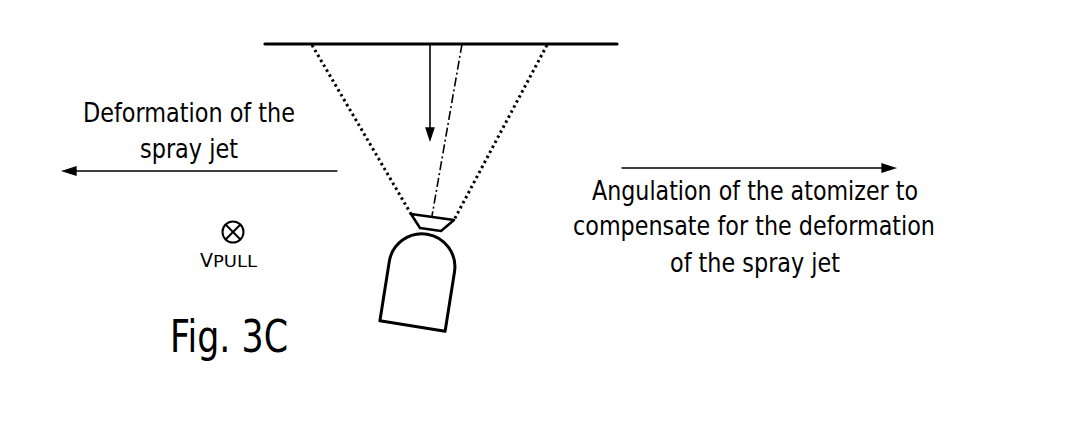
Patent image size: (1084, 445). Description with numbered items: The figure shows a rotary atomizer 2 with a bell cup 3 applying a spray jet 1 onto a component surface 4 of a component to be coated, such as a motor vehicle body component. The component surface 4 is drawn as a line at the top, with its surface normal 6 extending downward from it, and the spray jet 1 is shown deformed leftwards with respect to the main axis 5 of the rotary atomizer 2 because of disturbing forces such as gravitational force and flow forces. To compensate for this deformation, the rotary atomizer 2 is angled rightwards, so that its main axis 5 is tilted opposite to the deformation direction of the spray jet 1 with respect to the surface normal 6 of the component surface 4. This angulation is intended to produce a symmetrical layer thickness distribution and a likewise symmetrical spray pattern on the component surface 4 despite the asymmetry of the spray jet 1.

The spray jet 1 is at (508, 122).
The rotary atomizer 2 is at (457, 292).
The bell cup 3 is at (413, 226).
The component surface 4 is at (588, 45).
The main axis 5 is at (438, 175).
The surface normal 6 is at (430, 92).